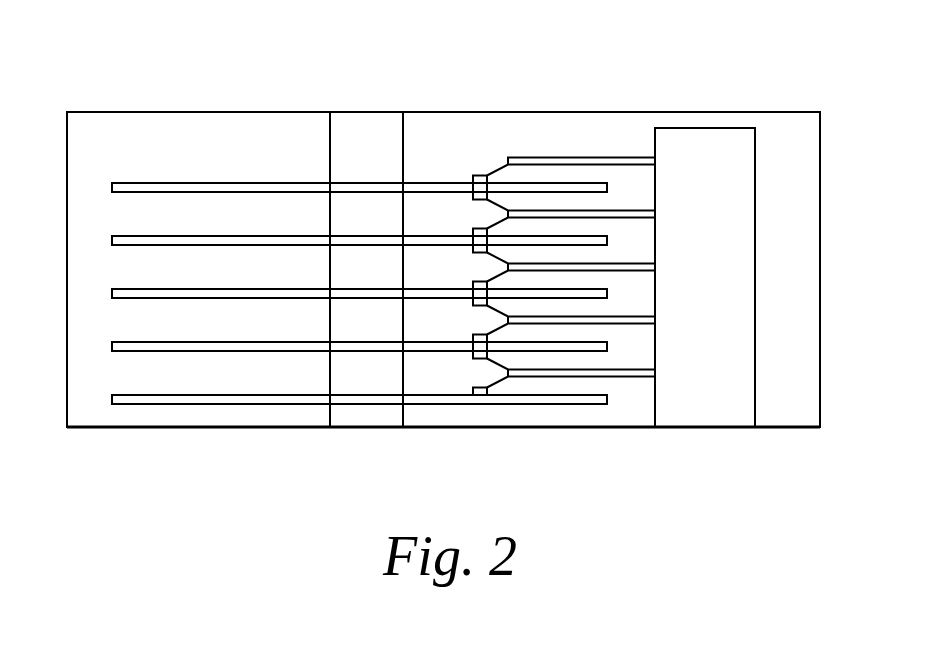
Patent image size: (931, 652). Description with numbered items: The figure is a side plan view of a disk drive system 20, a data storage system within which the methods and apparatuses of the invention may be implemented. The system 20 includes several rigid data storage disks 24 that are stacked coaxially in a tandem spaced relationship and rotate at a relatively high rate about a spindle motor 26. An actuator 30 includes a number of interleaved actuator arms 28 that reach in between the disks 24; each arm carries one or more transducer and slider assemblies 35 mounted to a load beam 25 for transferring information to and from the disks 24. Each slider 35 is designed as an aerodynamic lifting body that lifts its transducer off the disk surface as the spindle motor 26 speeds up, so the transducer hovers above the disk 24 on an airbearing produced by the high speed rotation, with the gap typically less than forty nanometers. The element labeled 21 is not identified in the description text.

The disk drive system 20 is at (688, 78).
The substrate 21 is at (820, 268).
The data storage disks 24 is at (112, 188).
The load beam 25 is at (495, 170).
The spindle motor 26 is at (360, 427).
The actuator arms 28 is at (548, 157).
The actuator 30 is at (699, 405).
The slider assemblies 35 is at (470, 177).